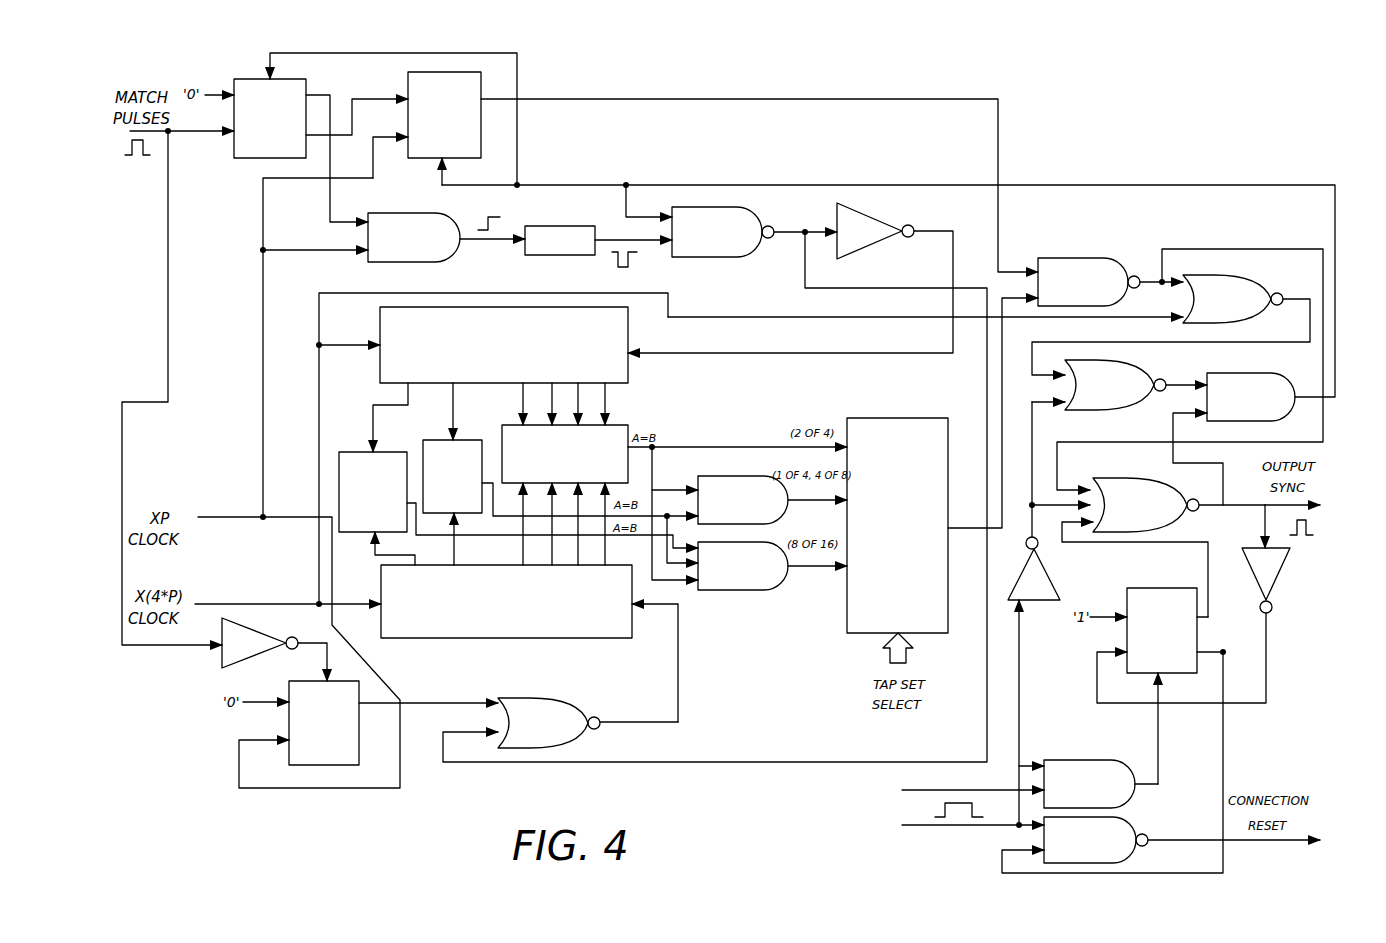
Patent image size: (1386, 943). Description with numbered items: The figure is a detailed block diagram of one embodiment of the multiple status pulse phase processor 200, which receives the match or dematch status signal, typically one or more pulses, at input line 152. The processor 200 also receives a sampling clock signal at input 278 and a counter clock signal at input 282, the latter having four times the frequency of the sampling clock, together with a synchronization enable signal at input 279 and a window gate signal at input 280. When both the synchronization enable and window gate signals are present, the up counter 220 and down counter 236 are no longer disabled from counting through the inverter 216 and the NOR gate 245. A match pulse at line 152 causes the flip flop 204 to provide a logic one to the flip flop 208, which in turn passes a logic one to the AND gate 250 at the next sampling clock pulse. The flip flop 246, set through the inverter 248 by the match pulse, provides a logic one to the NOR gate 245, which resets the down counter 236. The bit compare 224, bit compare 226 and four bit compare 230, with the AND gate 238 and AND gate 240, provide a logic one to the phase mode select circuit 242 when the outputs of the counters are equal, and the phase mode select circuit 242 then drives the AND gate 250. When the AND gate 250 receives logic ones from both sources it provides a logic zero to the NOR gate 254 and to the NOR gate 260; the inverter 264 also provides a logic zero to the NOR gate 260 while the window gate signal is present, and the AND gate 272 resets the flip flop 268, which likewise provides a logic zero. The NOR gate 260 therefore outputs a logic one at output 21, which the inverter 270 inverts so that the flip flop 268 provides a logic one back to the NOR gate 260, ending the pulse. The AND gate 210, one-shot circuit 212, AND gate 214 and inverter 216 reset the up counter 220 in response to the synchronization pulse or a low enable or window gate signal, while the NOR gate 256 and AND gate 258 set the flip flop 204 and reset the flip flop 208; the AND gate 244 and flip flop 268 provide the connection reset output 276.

The multiple status pulse phase processor 200 is at (1017, 172).
The input line 152 is at (190, 131).
The flip flop 204 is at (306, 84).
The flip flop 208 is at (452, 73).
The AND gate 210 is at (405, 213).
The one-shot circuit 212 is at (556, 226).
The AND gate 214 is at (735, 212).
The inverter 216 is at (875, 213).
The up counter 220 is at (630, 381).
The bit compare 224 is at (339, 472).
The bit compare 226 is at (468, 440).
The 4 bit compare 230 is at (628, 425).
The down counter 236 is at (497, 640).
The AND gate 238 is at (745, 590).
The AND gate 240 is at (718, 476).
The phase mode select circuit 242 is at (873, 418).
The AND gate 244 is at (1130, 821).
The NOR gate 245 is at (567, 698).
The flip flop 246 is at (330, 765).
The inverter 248 is at (245, 631).
The AND gate 250 is at (1070, 258).
The NOR gate 254 is at (1235, 276).
The NOR gate 256 is at (1125, 366).
The AND gate 258 is at (1250, 374).
The NOR gate 260 is at (1105, 479).
The inverter 264 is at (1050, 582).
The flip flop 268 is at (1133, 588).
The inverter 270 is at (1280, 576).
The AND gate 272 is at (1115, 760).
The connection reset output 276 is at (1232, 842).
The sampling clock signal input 278 is at (213, 517).
The synchronization enable input 279 is at (993, 790).
The window gate input 280 is at (983, 830).
The counter clock input 282 is at (217, 602).
The output 21 is at (1285, 505).